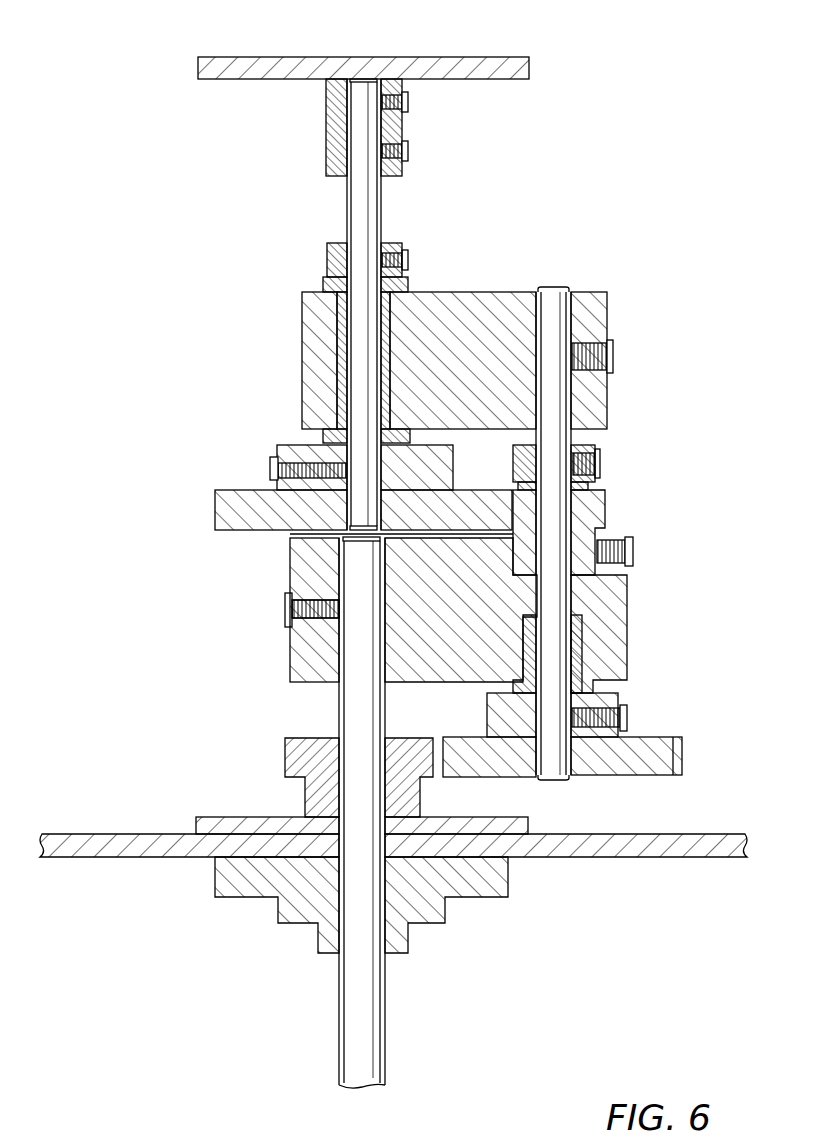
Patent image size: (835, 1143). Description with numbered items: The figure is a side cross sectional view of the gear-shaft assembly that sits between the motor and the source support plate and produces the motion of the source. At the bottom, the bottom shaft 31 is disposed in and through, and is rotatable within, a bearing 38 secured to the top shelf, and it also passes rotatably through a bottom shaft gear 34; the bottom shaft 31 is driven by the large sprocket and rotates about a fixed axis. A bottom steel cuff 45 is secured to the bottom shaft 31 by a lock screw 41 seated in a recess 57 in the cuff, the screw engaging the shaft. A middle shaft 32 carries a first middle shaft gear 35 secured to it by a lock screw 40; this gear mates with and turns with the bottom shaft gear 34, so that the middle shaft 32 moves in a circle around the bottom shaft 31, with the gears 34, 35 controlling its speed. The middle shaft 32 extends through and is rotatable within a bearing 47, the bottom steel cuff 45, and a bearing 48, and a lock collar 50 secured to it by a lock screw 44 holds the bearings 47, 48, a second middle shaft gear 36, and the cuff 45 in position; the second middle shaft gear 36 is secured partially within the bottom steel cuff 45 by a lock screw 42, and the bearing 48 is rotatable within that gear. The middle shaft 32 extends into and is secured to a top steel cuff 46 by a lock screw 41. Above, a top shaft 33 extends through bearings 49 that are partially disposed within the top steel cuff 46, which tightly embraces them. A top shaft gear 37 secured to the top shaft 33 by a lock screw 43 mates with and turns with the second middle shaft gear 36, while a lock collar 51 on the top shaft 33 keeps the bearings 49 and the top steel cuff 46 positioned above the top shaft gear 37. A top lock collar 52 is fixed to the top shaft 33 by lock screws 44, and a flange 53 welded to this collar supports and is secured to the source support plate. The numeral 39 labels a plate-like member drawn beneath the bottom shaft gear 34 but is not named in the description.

The bottom shaft 31 is at (342, 1022).
The middle shaft 32 is at (565, 778).
The top shaft 33 is at (347, 210).
The bottom shaft gear 34 is at (302, 800).
The first middle shaft gear 35 is at (682, 758).
The second middle shaft gear 36 is at (606, 520).
The top shaft gear 37 is at (213, 511).
The bearing 38 is at (480, 898).
The base plate 39 is at (197, 826).
The lock screw 40 is at (627, 718).
The lock screw 41 is at (614, 358).
The lock screw 42 is at (633, 553).
The lock screw 43 is at (270, 468).
The lock screw 44 is at (410, 100).
The bottom steel cuff 45 is at (290, 663).
The top steel cuff 46 is at (608, 312).
The bearing 47 is at (597, 690).
The bearing 48 is at (590, 487).
The bearings 49 is at (322, 287).
The lock collar 50 is at (585, 445).
The lock collar 51 is at (398, 240).
The top lock collar 52 is at (326, 122).
The flange 53 is at (235, 62).
The recess 57 is at (304, 596).